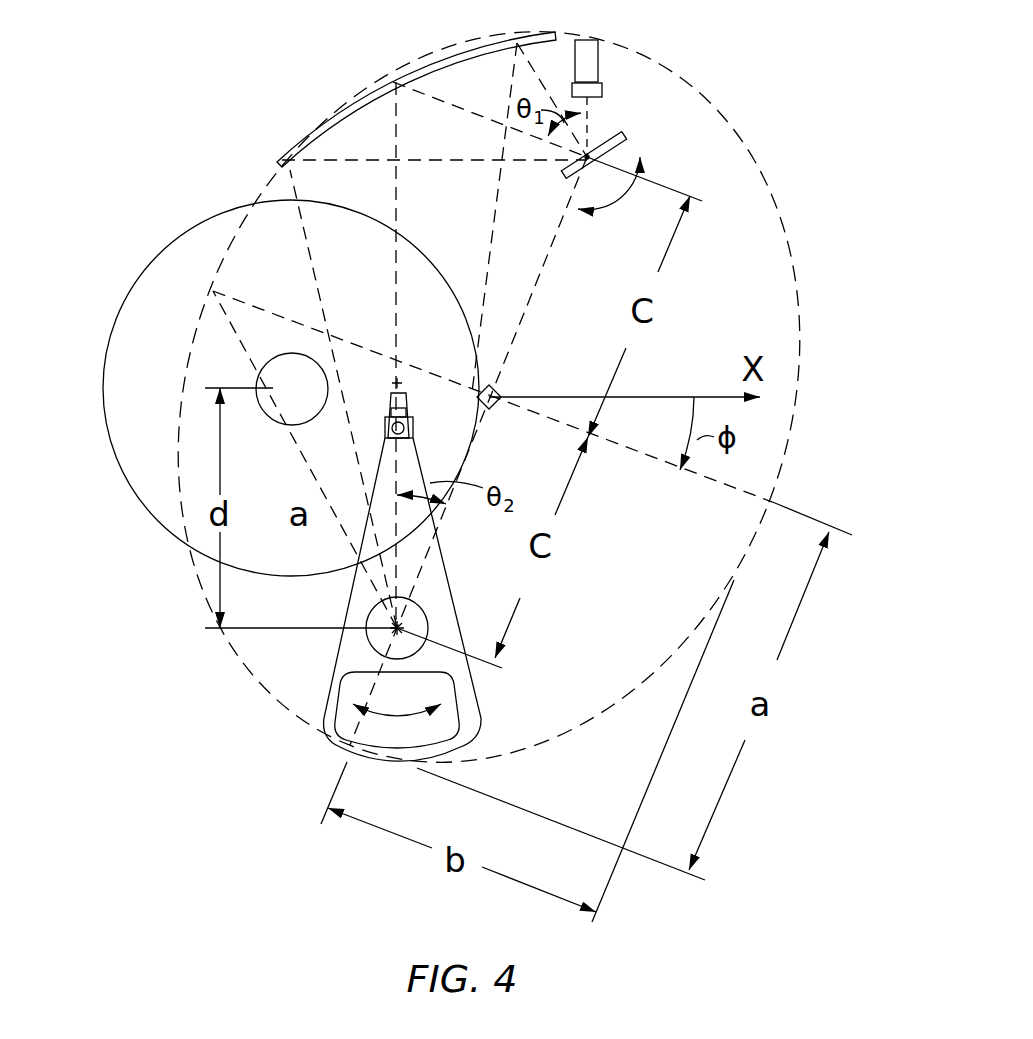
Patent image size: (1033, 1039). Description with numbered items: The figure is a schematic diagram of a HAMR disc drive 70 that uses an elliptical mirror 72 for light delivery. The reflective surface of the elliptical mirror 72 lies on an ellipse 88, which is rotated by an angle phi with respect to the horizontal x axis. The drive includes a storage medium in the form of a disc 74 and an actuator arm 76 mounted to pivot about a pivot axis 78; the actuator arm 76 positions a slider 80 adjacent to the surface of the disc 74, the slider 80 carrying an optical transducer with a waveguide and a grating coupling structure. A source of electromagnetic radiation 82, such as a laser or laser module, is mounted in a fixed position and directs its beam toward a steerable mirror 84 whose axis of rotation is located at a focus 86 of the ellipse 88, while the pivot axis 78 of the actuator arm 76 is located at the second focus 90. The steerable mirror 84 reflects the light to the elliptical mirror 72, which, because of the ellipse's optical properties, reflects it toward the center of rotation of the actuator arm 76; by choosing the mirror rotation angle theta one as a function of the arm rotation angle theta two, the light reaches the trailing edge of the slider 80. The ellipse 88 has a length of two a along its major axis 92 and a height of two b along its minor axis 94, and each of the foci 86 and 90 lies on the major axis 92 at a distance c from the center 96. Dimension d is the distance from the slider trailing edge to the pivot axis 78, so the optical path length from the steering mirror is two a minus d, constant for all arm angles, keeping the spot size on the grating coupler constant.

The HAMR disc drive 70 is at (134, 552).
The elliptical mirror 72 is at (446, 44).
The disc 74 is at (148, 268).
The actuator arm 76 is at (344, 615).
The pivot axis 78 is at (430, 620).
The slider 80 is at (403, 385).
The source of electromagnetic radiation 82 is at (583, 45).
The steerable mirror 84 is at (626, 138).
The focus 86 is at (587, 160).
The ellipse 88 is at (761, 174).
The second focus 90 is at (397, 631).
The major axis 92 is at (441, 520).
The minor axis 94 is at (703, 483).
The center 96 is at (491, 409).